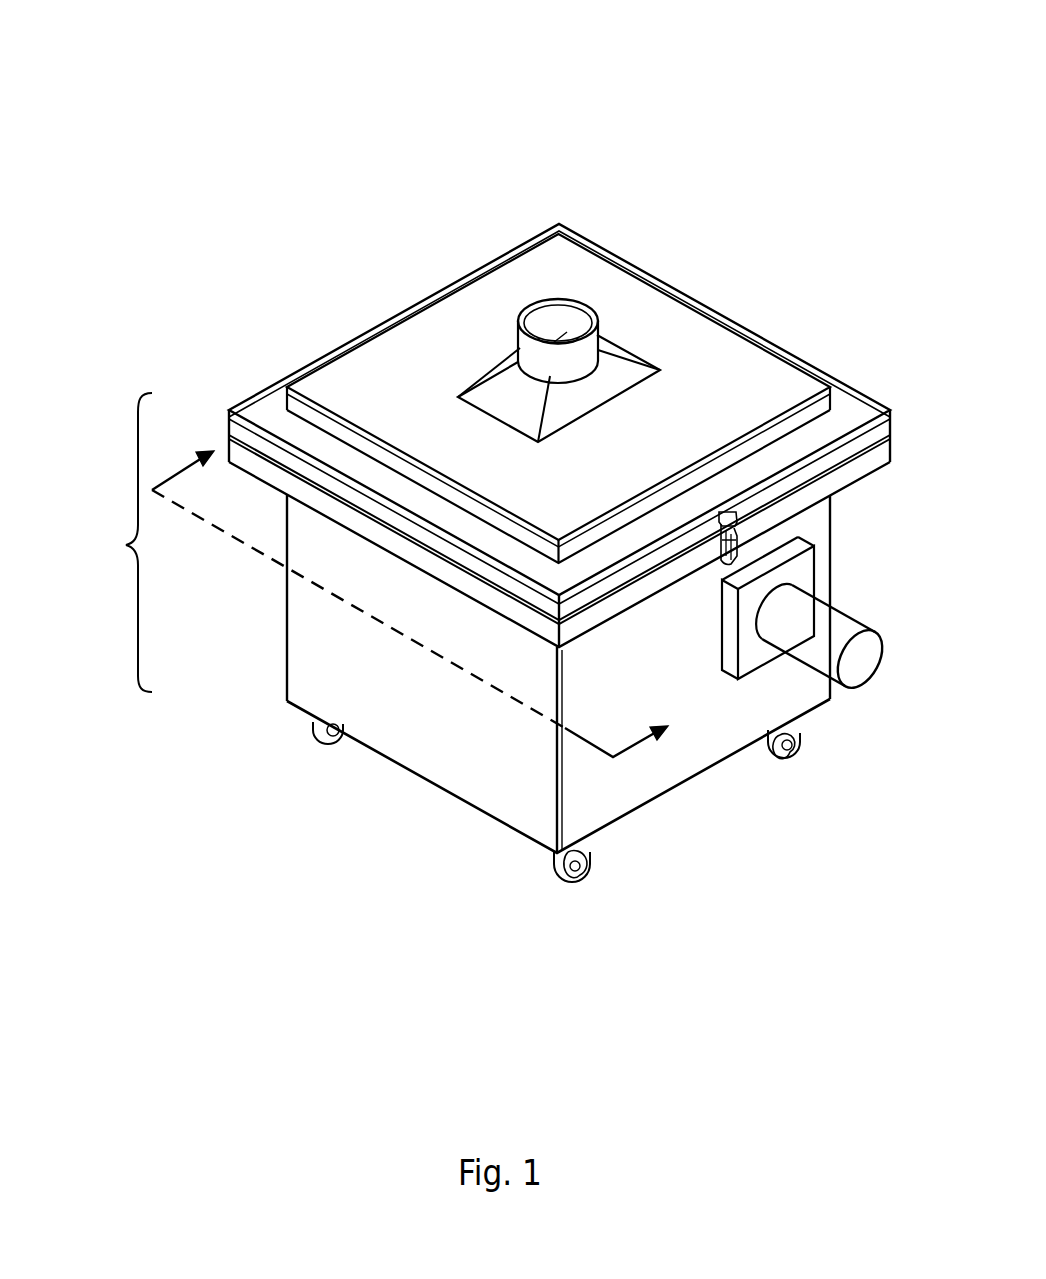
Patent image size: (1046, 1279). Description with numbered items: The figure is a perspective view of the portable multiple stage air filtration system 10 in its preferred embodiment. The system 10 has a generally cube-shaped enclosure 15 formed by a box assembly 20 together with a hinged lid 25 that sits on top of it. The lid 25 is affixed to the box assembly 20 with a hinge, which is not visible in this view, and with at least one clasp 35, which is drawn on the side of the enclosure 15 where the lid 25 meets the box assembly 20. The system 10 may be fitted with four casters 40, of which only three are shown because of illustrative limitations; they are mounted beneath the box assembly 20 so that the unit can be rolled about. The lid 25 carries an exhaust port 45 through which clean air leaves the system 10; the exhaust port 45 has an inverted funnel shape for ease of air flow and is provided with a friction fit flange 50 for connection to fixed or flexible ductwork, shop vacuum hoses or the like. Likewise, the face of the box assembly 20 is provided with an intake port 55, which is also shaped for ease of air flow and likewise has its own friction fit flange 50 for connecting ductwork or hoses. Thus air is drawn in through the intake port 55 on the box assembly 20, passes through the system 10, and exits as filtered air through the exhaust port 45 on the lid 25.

The portable multiple stage air filtration system 10 is at (238, 179).
The enclosure 15 is at (126, 547).
The box assembly 20 is at (428, 748).
The lid 25 is at (375, 363).
The clasp 35 is at (731, 566).
The caster 40 is at (317, 733).
The exhaust port 45 is at (613, 377).
The friction fit flange 50 is at (563, 315).
The intake port 55 is at (830, 625).